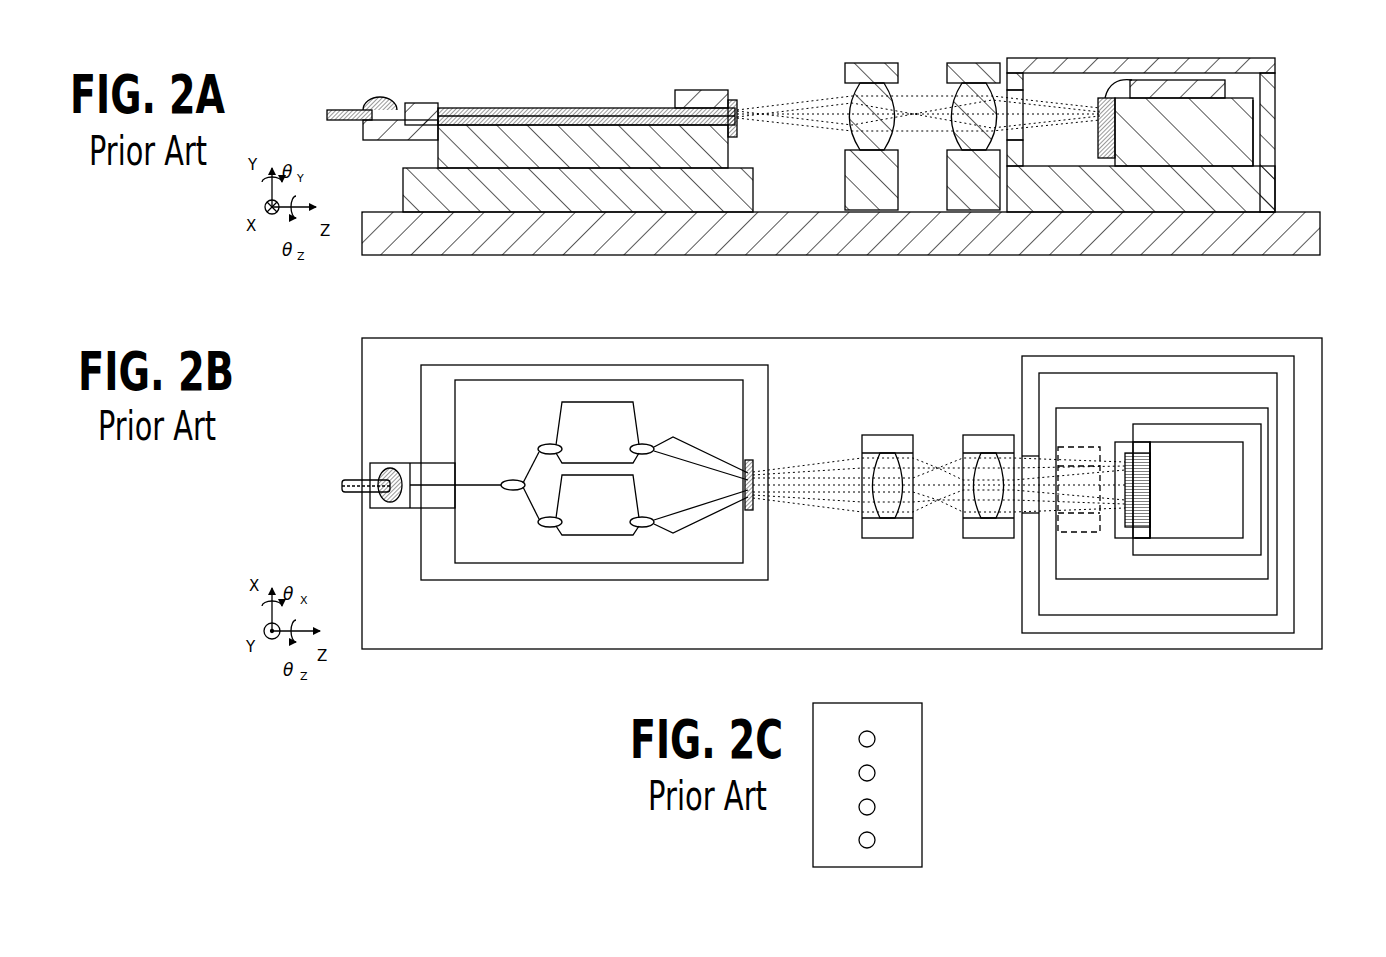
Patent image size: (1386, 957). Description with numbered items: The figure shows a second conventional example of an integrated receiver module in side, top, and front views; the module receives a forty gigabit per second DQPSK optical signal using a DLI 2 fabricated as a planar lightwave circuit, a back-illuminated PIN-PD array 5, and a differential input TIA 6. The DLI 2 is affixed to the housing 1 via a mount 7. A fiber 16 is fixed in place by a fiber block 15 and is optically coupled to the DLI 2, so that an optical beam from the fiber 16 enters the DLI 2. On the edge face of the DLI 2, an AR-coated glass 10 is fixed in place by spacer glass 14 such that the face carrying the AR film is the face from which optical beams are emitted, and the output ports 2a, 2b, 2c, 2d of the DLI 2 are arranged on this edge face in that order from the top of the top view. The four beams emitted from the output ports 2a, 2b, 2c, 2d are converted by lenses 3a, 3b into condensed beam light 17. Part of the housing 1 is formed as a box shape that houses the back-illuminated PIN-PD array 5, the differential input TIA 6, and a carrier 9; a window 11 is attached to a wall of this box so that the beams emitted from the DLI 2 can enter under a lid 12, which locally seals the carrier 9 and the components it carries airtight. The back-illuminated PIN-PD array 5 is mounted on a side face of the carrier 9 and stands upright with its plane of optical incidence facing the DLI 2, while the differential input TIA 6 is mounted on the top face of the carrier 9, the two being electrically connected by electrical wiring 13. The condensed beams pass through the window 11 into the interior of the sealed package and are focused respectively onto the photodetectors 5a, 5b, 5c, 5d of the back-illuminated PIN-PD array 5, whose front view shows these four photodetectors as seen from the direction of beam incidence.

In FIG. 2A, the housing 1 is at (578, 255).
In FIG. 2B, the housing 1 is at (697, 612).
In FIG. 2A, the DLI 2 is at (462, 112).
In FIG. 2B, the DLI 2 is at (490, 400).
In FIG. 2B, the output port 2a is at (728, 470).
In FIG. 2B, the output port 2b is at (652, 465).
In FIG. 2B, the output port 2c is at (643, 501).
In FIG. 2B, the output port 2d is at (652, 516).
In FIG. 2A, the lens 3a is at (852, 96).
In FIG. 2B, the lens 3a is at (880, 436).
In FIG. 2A, the lens 3b is at (954, 96).
In FIG. 2B, the lens 3b is at (975, 436).
In FIG. 2A, the back-illuminated PIN-PD array 5 is at (1108, 160).
In FIG. 2B, the back-illuminated PIN-PD array 5 is at (1117, 524).
In FIG. 2C, the back-illuminated PIN-PD array 5 is at (906, 712).
In FIG. 2C, the photodetector 5a is at (876, 841).
In FIG. 2C, the photodetector 5b is at (876, 808).
In FIG. 2C, the photodetector 5c is at (876, 774).
In FIG. 2C, the photodetector 5d is at (876, 740).
In FIG. 2A, the differential input TIA 6 is at (1228, 88).
In FIG. 2B, the differential input TIA 6 is at (1180, 532).
In FIG. 2A, the mount 7 is at (522, 190).
In FIG. 2B, the mount 7 is at (572, 580).
In FIG. 2A, the carrier 9 is at (1240, 140).
In FIG. 2B, the carrier 9 is at (1227, 432).
In FIG. 2A, the AR-coated glass 10 is at (736, 100).
In FIG. 2B, the AR-coated glass 10 is at (750, 512).
In FIG. 2A, the window 11 is at (1023, 132).
In FIG. 2A, the lid 12 is at (1277, 60).
In FIG. 2B, the lid 12 is at (1060, 392).
In FIG. 2A, the electrical wiring 13 is at (1106, 86).
In FIG. 2B, the electrical wiring 13 is at (1142, 446).
In FIG. 2A, the spacer glass 14 is at (676, 94).
In FIG. 2A, the fiber block 15 is at (418, 102).
In FIG. 2B, the fiber block 15 is at (412, 470).
In FIG. 2A, the fiber 16 is at (350, 108).
In FIG. 2B, the fiber 16 is at (366, 478).
In FIG. 2A, the condensed beam light 17 is at (1256, 128).
In FIG. 2B, the condensed beam light 17 is at (1143, 545).